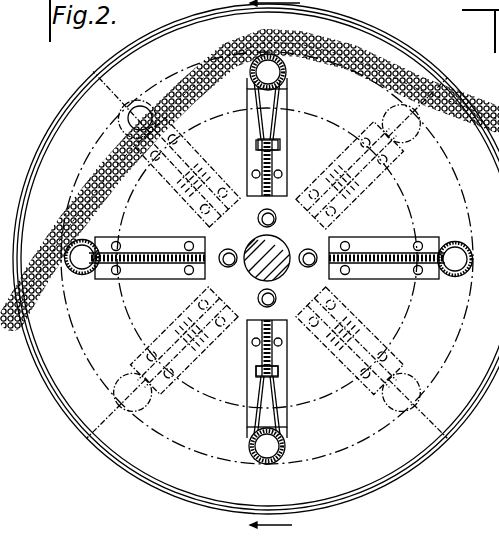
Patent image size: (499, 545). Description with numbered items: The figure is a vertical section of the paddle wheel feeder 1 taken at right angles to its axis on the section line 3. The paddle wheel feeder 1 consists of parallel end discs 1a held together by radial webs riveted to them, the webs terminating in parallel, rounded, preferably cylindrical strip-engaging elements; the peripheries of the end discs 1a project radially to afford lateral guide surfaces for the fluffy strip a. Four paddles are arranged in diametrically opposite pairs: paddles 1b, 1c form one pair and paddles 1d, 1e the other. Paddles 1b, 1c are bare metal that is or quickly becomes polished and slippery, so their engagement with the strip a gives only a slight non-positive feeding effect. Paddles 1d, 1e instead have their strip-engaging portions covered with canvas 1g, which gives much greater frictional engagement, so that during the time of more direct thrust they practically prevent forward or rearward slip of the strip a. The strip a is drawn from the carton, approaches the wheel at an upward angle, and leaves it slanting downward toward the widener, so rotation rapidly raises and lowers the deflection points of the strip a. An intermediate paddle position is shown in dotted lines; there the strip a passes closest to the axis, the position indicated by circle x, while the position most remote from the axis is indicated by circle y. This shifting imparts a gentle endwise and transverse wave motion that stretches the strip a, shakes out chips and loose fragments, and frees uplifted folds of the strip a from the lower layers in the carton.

The paddle wheel feeder 1 is at (378, 32).
The end disc 1a is at (397, 470).
The paddle 1b is at (82, 274).
The paddle 1c is at (450, 277).
The paddle 1d is at (290, 78).
The paddle 1e is at (286, 448).
The canvas 1g is at (284, 122).
The section line 3 is at (294, 272).
The strip a is at (248, 40).
The circle x is at (411, 207).
The circle y is at (466, 198).